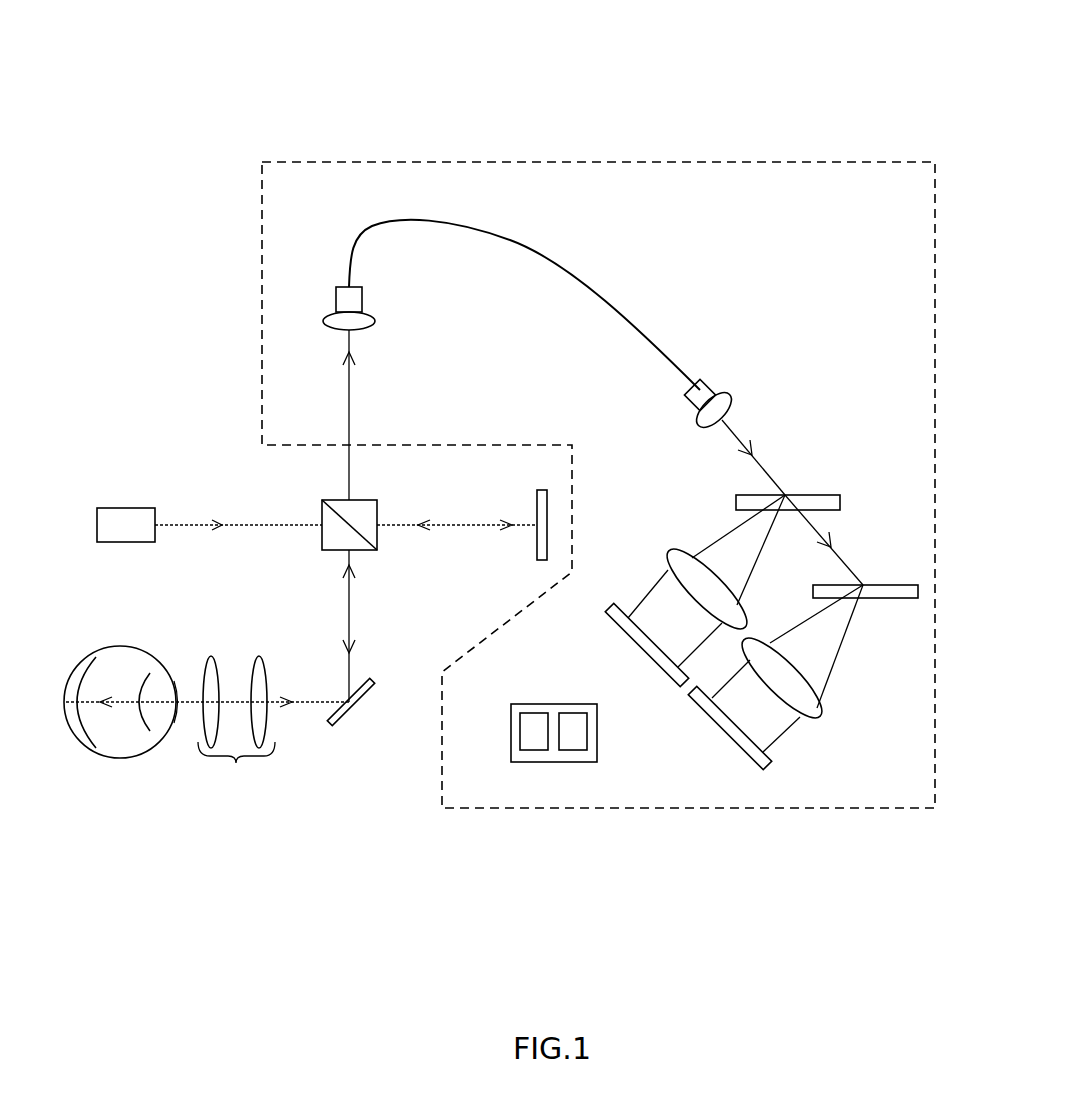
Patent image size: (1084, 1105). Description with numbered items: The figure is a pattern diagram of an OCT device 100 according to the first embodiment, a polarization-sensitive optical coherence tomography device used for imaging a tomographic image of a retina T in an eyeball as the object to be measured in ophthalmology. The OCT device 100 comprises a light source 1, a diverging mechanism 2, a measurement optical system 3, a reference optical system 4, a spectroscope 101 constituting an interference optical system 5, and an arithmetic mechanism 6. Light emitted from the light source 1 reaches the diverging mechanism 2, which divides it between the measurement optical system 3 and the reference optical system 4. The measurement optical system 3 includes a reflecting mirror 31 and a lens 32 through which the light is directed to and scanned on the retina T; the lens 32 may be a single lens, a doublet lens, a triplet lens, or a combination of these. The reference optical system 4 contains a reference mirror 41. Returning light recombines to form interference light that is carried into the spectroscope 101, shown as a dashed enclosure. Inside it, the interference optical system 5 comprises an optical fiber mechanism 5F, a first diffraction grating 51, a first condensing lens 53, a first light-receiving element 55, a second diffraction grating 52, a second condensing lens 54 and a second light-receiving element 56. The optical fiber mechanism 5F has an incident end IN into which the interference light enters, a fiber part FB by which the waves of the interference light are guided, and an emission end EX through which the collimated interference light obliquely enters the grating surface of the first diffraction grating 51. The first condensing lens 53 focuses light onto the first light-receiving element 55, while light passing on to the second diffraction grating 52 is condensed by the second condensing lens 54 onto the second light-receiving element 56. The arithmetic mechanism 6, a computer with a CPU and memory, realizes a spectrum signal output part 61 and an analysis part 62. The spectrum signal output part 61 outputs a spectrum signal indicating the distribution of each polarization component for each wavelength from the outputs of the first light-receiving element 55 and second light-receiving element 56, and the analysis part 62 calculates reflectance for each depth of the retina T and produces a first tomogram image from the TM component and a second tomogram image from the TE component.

The OCT device 100 is at (655, 87).
The spectroscope 101 is at (832, 286).
The light source 1 is at (135, 508).
The diverging mechanism 2 is at (338, 500).
The measurement optical system 3 is at (283, 777).
The reflecting mirror 31 is at (345, 720).
The lens 32 is at (236, 722).
The reference optical system 4 is at (455, 518).
The reference mirror 41 is at (537, 545).
The interference optical system 5 is at (757, 291).
The optical fiber mechanism 5F is at (577, 257).
The first diffraction grating 51 is at (808, 493).
The second diffraction grating 52 is at (893, 585).
The first condensing lens 53 is at (672, 558).
The second condensing lens 54 is at (820, 716).
The first light-receiving element 55 is at (634, 655).
The second light-receiving element 56 is at (725, 743).
The arithmetic mechanism 6 is at (553, 704).
The spectrum signal output part 61 is at (535, 750).
The analysis part 62 is at (575, 750).
The fiber part FB is at (522, 246).
The incident end IN is at (362, 300).
The emission end EX is at (693, 410).
The retina T is at (85, 742).